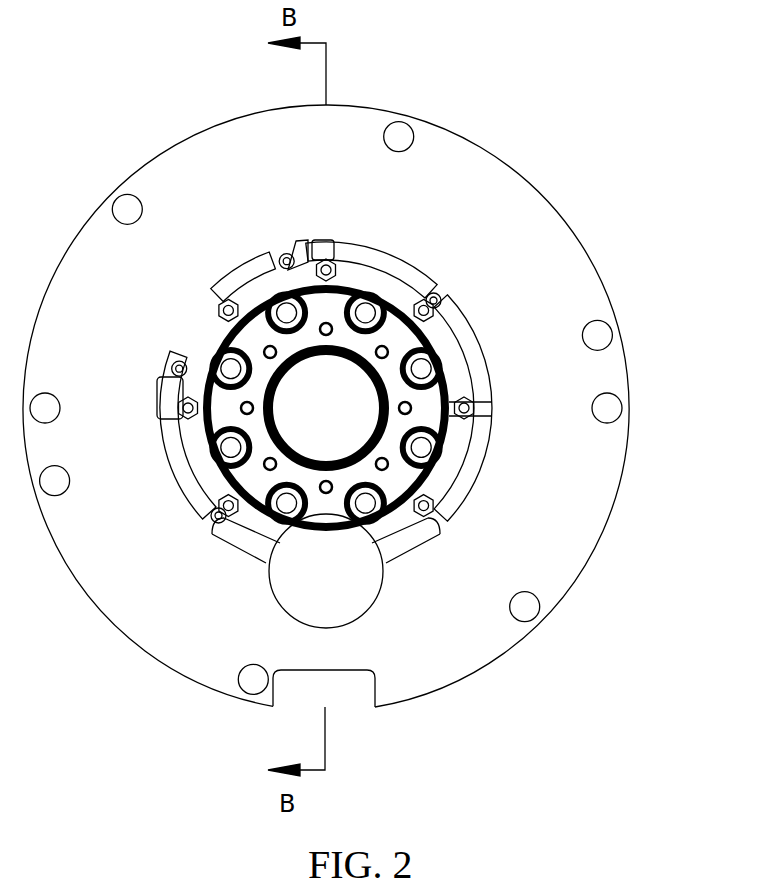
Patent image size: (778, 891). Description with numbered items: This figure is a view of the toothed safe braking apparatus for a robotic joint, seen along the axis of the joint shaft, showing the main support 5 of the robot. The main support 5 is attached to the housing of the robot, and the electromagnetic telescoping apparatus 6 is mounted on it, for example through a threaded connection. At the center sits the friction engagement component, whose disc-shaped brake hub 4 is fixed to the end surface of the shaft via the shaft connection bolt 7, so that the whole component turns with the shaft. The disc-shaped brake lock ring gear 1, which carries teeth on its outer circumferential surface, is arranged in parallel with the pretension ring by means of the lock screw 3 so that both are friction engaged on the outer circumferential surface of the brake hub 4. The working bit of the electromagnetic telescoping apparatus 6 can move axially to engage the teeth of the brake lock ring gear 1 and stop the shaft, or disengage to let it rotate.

The brake lock ring gear 1 is at (336, 250).
The lock screw 3 is at (340, 262).
The brake hub 4 is at (395, 347).
The main support 5 is at (556, 548).
The electromagnetic telescoping apparatus 6 is at (348, 597).
The shaft connection bolt 7 is at (418, 449).